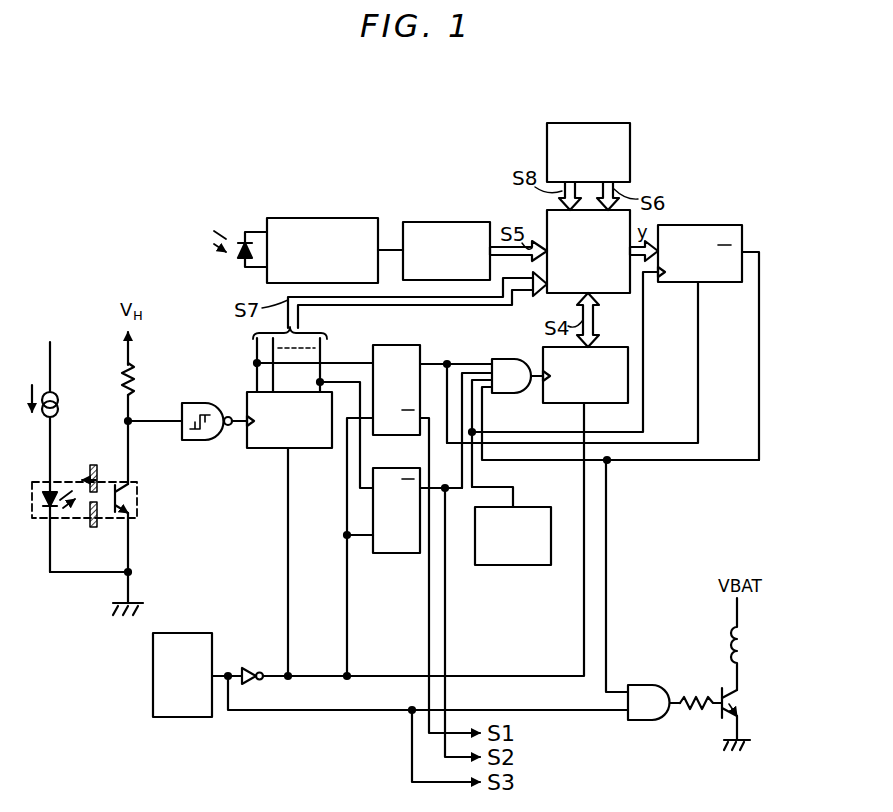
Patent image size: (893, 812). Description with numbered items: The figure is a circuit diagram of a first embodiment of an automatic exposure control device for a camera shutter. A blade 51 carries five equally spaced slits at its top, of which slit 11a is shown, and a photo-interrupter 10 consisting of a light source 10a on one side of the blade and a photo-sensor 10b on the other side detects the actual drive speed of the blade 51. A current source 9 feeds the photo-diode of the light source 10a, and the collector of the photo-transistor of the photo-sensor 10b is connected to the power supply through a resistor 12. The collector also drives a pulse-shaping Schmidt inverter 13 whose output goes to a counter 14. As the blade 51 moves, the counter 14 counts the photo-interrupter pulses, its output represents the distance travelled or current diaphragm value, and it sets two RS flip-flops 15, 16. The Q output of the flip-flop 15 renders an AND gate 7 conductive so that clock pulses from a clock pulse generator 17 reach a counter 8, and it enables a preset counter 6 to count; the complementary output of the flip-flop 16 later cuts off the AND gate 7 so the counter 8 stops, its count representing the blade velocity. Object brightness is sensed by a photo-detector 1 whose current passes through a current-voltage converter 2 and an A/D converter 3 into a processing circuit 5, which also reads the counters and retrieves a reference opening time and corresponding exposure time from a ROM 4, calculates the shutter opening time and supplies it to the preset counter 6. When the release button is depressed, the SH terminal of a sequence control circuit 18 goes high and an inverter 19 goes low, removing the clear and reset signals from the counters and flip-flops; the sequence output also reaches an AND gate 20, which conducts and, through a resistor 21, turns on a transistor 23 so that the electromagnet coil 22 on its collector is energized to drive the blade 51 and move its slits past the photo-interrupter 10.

The photo-detector 1 is at (243, 230).
The current-voltage converter 2 is at (320, 218).
The A/D converter 3 is at (486, 222).
The ROM 4 is at (630, 158).
The processing circuit 5 is at (547, 220).
The preset counter 6 is at (712, 225).
The AND gate 7 is at (510, 358).
The counter 8 is at (602, 347).
The current source 9 is at (58, 396).
The photo-interrupter 10 is at (112, 518).
The light source 10a is at (58, 510).
The photo-sensor 10b is at (134, 499).
The slit 11a is at (120, 448).
The resistor 12 is at (135, 374).
The Schmidt inverter 13 is at (205, 403).
The counter 14 is at (247, 395).
The flip-flop 15 is at (411, 345).
The flip-flop 16 is at (385, 468).
The clock pulse generator 17 is at (530, 507).
The sequence control circuit 18 is at (190, 633).
The inverter 19 is at (247, 667).
The AND gate 20 is at (648, 685).
The resistor 21 is at (692, 701).
The coil 22 is at (731, 640).
The transistor 23 is at (738, 707).
The blade 51 is at (97, 527).